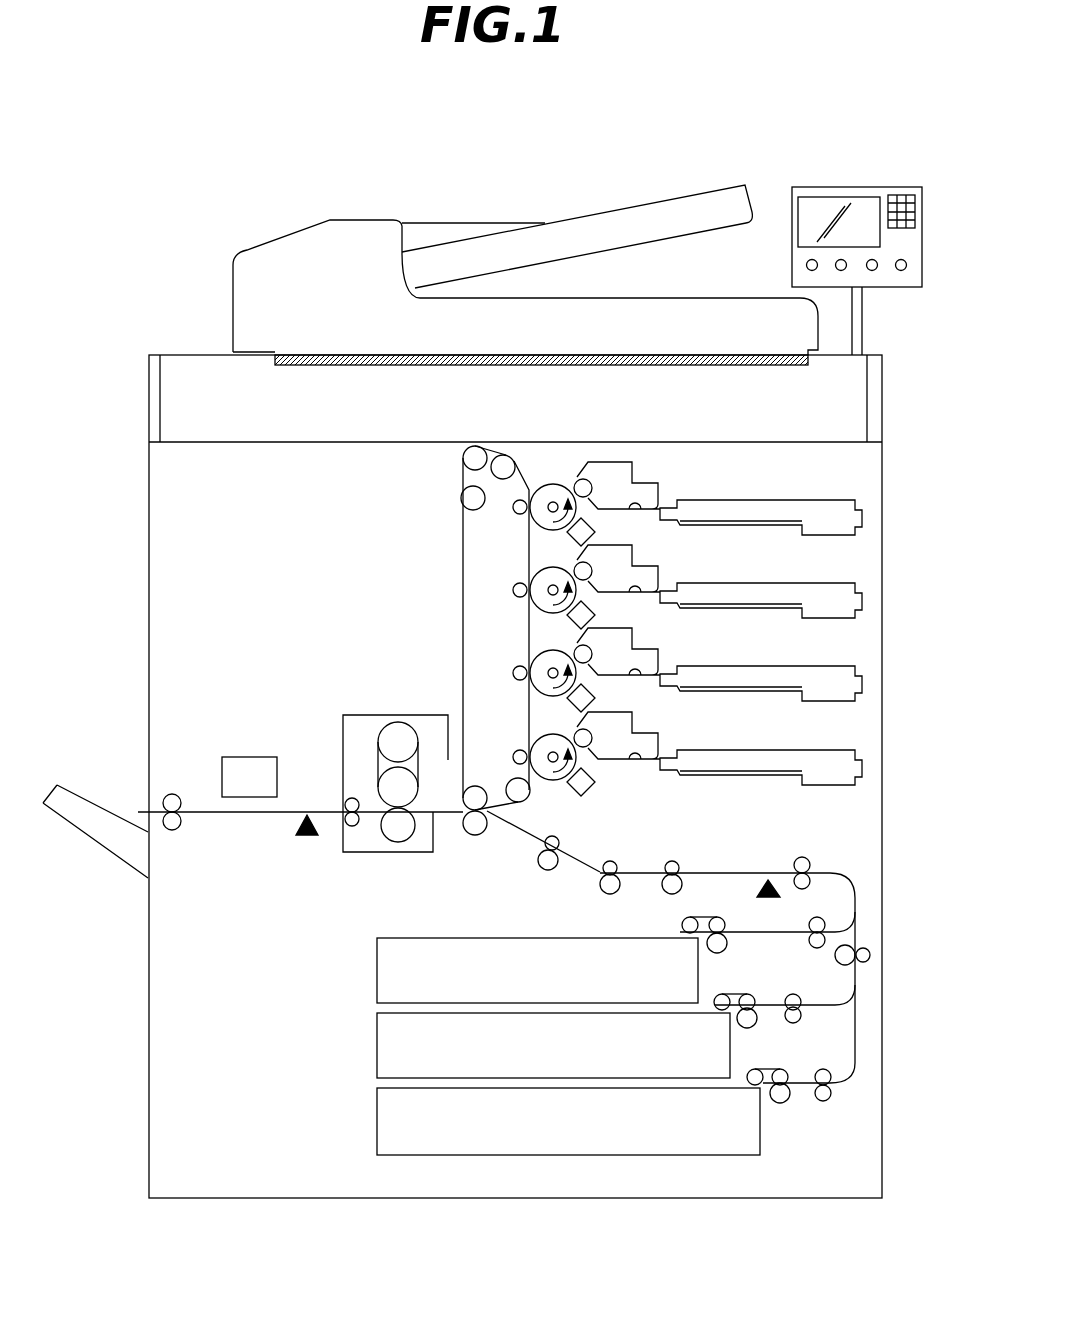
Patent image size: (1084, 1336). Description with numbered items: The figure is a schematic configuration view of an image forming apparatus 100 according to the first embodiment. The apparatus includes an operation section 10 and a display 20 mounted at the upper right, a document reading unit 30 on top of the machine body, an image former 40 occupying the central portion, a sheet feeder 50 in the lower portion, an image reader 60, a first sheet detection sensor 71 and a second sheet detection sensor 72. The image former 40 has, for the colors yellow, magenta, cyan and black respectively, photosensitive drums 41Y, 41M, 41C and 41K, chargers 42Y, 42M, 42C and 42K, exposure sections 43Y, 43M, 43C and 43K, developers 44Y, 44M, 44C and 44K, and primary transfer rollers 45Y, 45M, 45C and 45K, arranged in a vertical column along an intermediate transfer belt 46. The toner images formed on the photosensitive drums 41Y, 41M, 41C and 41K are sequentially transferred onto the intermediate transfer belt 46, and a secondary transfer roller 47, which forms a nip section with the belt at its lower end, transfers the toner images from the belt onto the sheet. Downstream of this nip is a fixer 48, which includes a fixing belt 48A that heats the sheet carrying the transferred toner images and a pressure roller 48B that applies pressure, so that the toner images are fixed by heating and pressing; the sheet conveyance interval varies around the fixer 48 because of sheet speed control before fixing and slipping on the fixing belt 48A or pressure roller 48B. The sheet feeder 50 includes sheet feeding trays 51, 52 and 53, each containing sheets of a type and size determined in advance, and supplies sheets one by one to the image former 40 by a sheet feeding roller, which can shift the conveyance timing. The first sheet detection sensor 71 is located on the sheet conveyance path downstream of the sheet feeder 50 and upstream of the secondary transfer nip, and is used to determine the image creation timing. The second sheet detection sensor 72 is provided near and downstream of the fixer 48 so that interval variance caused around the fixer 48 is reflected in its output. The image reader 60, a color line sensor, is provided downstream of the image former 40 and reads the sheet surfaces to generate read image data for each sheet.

The image forming apparatus 100 is at (909, 136).
The operation section 10 is at (922, 238).
The display 20 is at (822, 212).
The document reading unit 30 is at (225, 380).
The image former 40 is at (889, 592).
The photosensitive drum 41Y is at (563, 484).
The photosensitive drum 41M is at (542, 578).
The photosensitive drum 41C is at (542, 662).
The photosensitive drum 41K is at (552, 781).
The charger 42Y is at (567, 537).
The charger 42M is at (567, 622).
The charger 42C is at (567, 702).
The charger 42K is at (589, 788).
The exposure section 43Y is at (765, 500).
The exposure section 43M is at (765, 583).
The exposure section 43C is at (765, 666).
The exposure section 43K is at (765, 750).
The developer 44Y is at (660, 488).
The developer 44M is at (660, 571).
The developer 44C is at (660, 654).
The developer 44K is at (660, 738).
The primary transfer roller 45Y is at (522, 500).
The primary transfer roller 45M is at (513, 592).
The primary transfer roller 45C is at (513, 675).
The primary transfer roller 45K is at (516, 752).
The intermediate transfer belt 46 is at (462, 520).
The secondary transfer roller 47 is at (477, 828).
The fixer 48 is at (363, 780).
The fixing belt 48A is at (373, 762).
The pressure roller 48B is at (388, 832).
The sheet feeder 50 is at (539, 1103).
The sheet feeding tray 51 is at (375, 973).
The sheet feeding tray 52 is at (375, 1048).
The sheet feeding tray 53 is at (375, 1118).
The image reader 60 is at (247, 755).
The first sheet detection sensor 71 is at (764, 881).
The second sheet detection sensor 72 is at (297, 837).